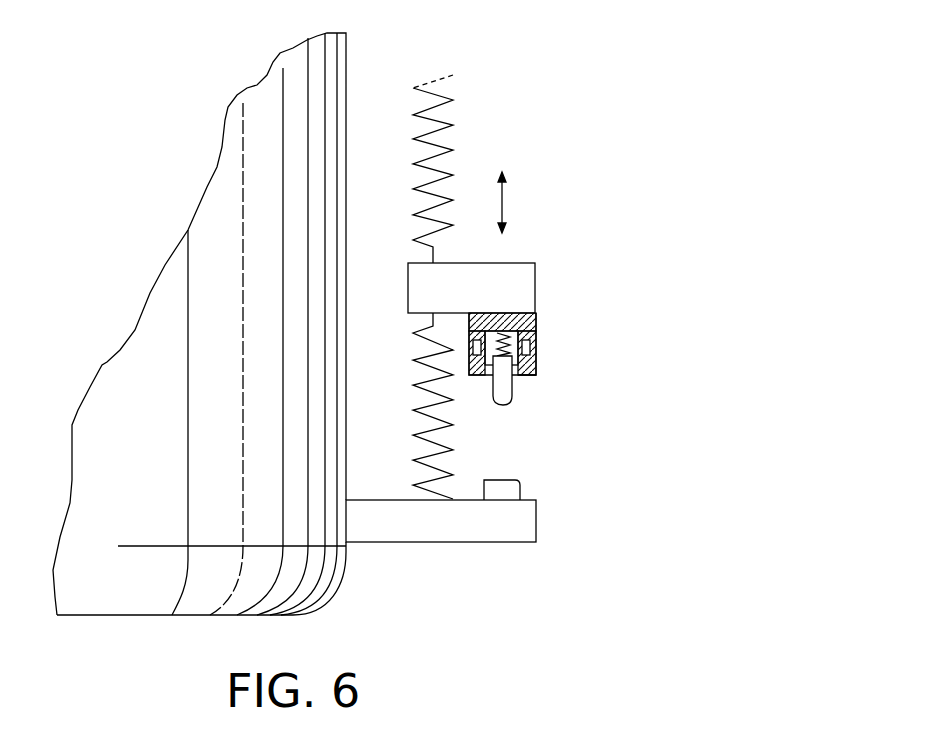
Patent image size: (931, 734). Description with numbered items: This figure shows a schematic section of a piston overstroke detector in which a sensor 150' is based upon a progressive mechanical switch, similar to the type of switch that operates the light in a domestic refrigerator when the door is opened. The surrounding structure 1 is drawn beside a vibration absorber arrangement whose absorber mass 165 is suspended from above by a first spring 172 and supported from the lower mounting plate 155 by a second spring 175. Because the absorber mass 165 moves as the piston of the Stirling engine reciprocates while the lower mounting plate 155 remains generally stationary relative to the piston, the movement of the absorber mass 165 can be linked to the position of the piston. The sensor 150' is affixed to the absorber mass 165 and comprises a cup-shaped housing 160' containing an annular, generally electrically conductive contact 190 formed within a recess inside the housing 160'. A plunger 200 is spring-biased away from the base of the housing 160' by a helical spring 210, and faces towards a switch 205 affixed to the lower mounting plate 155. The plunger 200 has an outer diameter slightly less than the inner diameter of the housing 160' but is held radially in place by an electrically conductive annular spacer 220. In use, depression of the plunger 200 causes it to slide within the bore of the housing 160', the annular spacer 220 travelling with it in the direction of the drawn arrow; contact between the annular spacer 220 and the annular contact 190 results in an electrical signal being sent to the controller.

The vehicle hood / body panel 1 is at (348, 58).
The sensor 150' is at (607, 85).
The lower mounting plate 155 is at (488, 542).
The housing 160' is at (538, 328).
The absorber mass 165 is at (535, 262).
The first spring 172 is at (458, 120).
The second spring 175 is at (412, 410).
The annular contact 190 is at (536, 348).
The plunger 200 is at (505, 405).
The switch 205 is at (521, 492).
The helical spring 210 is at (507, 338).
The annular spacer 220 is at (525, 378).